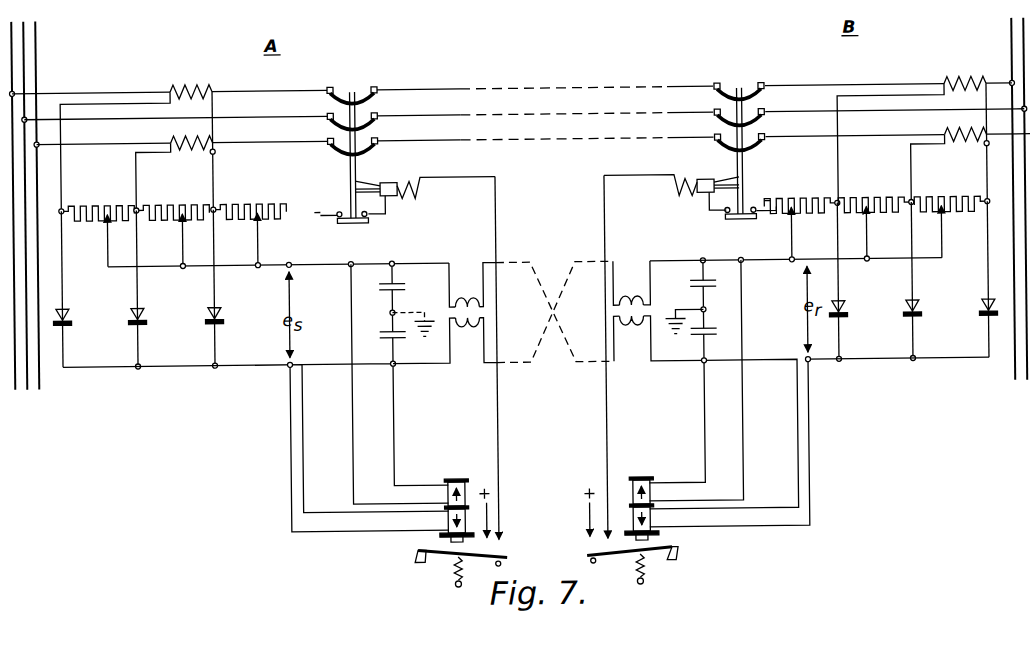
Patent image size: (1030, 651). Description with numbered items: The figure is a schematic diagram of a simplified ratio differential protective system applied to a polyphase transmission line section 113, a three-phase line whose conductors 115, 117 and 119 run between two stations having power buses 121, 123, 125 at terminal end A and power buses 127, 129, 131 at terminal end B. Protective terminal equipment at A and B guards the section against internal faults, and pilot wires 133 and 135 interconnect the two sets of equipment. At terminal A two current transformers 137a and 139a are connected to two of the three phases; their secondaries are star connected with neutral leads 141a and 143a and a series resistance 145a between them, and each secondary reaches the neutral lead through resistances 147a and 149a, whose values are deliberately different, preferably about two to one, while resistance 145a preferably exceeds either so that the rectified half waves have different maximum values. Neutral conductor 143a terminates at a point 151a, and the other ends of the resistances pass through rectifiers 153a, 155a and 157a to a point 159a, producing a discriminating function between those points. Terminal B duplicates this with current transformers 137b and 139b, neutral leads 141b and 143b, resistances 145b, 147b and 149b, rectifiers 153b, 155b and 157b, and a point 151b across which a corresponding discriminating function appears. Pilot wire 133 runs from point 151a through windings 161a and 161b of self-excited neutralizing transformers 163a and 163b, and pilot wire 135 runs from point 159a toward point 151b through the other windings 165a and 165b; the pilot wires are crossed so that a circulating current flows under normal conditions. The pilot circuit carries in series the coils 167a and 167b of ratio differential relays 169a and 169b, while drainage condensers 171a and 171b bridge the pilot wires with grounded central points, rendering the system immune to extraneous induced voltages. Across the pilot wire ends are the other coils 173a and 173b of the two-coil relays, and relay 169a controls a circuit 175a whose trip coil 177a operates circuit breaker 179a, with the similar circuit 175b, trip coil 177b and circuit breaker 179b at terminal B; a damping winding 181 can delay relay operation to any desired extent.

The polyphase transmission line section 113 is at (641, 85).
The conductor 115 is at (532, 95).
The conductor 117 is at (532, 121).
The conductor 119 is at (532, 146).
The power bus 121 is at (11, 52).
The power bus 123 is at (23, 66).
The power bus 125 is at (35, 81).
The power bus 127 is at (1011, 36).
The power bus 129 is at (1023, 58).
The power bus 131 is at (1029, 77).
The pilot wire 133 is at (528, 269).
The pilot wire 135 is at (548, 369).
The current transformer 137a is at (231, 77).
The current transformer 137b is at (948, 80).
The current transformer 139a is at (200, 157).
The current transformer 139b is at (983, 160).
The neutral lead 141a is at (211, 179).
The neutral lead 141b is at (986, 206).
The neutral lead 143a is at (171, 265).
The neutral lead 143b is at (866, 268).
The series resistance 145a is at (277, 198).
The series resistance 145b is at (978, 197).
The resistance 147a is at (126, 196).
The resistance 147b is at (793, 236).
The resistance 149a is at (202, 197).
The resistance 149b is at (903, 196).
The point 151a is at (293, 258).
The point 151b is at (790, 268).
The rectifier 153a is at (63, 319).
The rectifier 153b is at (840, 318).
The rectifier 155a is at (138, 318).
The rectifier 155b is at (914, 318).
The rectifier 157a is at (215, 320).
The rectifier 157b is at (983, 333).
The point 159a is at (287, 370).
The winding 161a is at (451, 310).
The winding 161b is at (639, 345).
The self-excited neutralizing transformer 163a is at (541, 332).
The self-excited neutralizing transformer 163b is at (614, 318).
The winding 165a is at (471, 338).
The winding 165b is at (626, 297).
The coil 167a is at (465, 527).
The coil 167b is at (629, 524).
The ratio differential relay 169a is at (468, 478).
The ratio differential relay 169b is at (663, 478).
The drainage condenser 171a is at (383, 293).
The drainage condenser 171b is at (710, 290).
The coil 173a is at (463, 493).
The coil 173b is at (630, 495).
The circuit 175a is at (497, 386).
The circuit 175b is at (601, 383).
The trip coil 177a is at (392, 190).
The trip coil 177b is at (727, 176).
The circuit breaker 179a is at (357, 116).
The circuit breaker 179b is at (750, 153).
The damping winding 181 is at (437, 540).